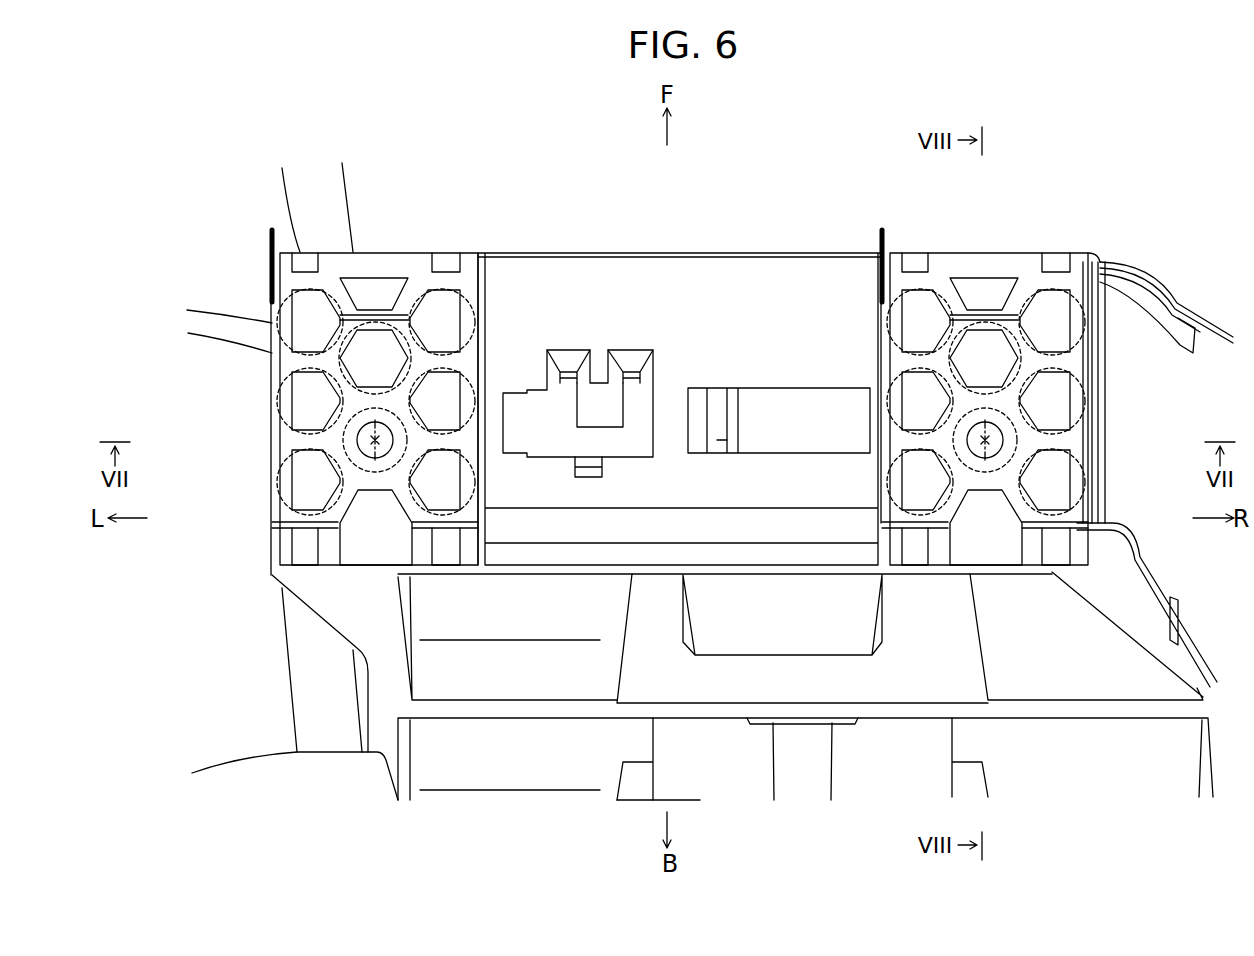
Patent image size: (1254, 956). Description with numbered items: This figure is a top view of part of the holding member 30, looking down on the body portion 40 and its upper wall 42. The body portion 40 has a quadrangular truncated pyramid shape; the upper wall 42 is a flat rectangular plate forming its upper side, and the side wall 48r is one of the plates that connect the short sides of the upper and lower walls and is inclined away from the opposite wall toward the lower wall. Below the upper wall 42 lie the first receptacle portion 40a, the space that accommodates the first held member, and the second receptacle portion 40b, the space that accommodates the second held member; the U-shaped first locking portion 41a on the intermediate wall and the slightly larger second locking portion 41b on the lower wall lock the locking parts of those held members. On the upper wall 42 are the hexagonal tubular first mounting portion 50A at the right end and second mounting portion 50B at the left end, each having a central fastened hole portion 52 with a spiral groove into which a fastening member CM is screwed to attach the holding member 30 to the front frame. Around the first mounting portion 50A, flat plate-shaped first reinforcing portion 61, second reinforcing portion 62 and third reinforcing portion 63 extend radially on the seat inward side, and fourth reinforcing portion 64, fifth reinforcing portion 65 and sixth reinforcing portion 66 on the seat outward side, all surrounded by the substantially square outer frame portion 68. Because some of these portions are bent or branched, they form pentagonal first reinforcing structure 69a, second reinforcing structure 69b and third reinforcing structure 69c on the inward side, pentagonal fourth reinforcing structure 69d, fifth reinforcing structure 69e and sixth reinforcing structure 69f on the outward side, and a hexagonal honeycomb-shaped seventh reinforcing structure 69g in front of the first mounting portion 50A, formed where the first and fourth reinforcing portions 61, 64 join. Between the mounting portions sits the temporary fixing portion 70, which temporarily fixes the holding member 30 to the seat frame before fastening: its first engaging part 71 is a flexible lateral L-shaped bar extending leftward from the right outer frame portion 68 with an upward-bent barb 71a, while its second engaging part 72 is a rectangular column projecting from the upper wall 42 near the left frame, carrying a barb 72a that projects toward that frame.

The holding member 30 is at (1041, 123).
The body portion 40 is at (789, 247).
The first receptacle portion 40a is at (523, 660).
The second receptacle portion 40b is at (523, 762).
The first locking portion 41a is at (647, 614).
The second locking portion 41b is at (672, 741).
The upper wall 42 is at (679, 409).
The side wall 48r is at (1145, 352).
The first mounting portion 50A is at (990, 472).
The second mounting portion 50B is at (380, 472).
The fastened hole portion 52 is at (375, 446).
The first reinforcing portion 61 is at (430, 350).
The second reinforcing portion 62 is at (440, 443).
The third reinforcing portion 63 is at (425, 500).
The fourth reinforcing portion 64 is at (332, 390).
The fifth reinforcing portion 65 is at (285, 441).
The sixth reinforcing portion 66 is at (340, 496).
The outer frame portion 68 is at (340, 521).
The first reinforcing structure 69a is at (445, 270).
The second reinforcing structure 69b is at (446, 394).
The third reinforcing structure 69c is at (470, 467).
The fourth reinforcing structure 69d is at (308, 268).
The fifth reinforcing structure 69e is at (272, 412).
The sixth reinforcing structure 69f is at (300, 540).
The seventh reinforcing structure 69g is at (370, 298).
The temporary fixing portion 70 is at (686, 206).
The first engaging part 71 is at (747, 397).
The barb 71a is at (717, 446).
The second engaging part 72 is at (633, 364).
The barb 72a is at (600, 470).
The fastening member CM is at (412, 470).